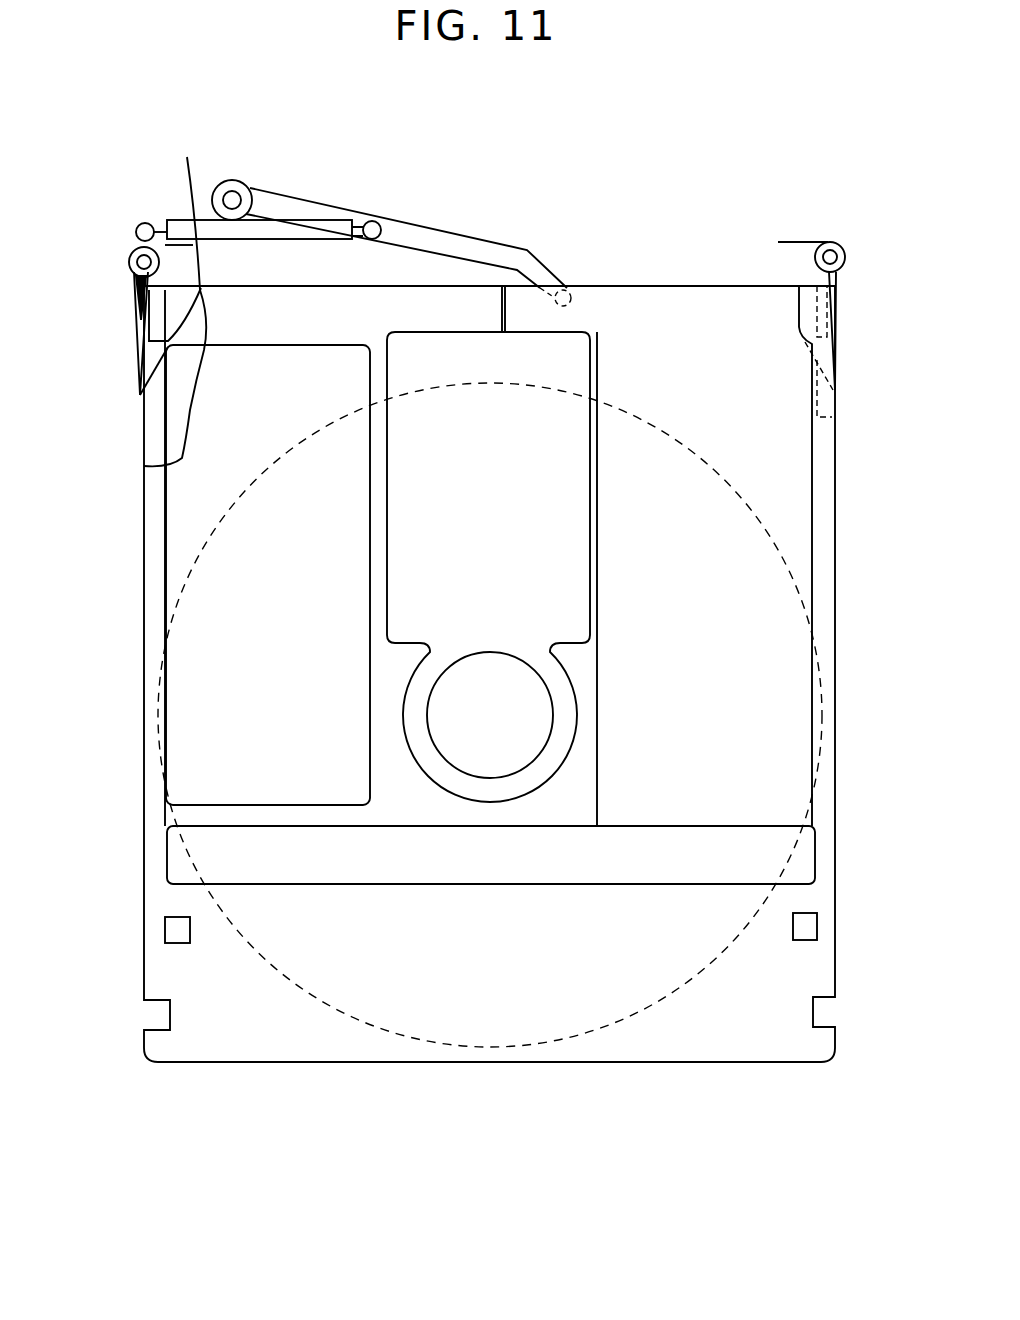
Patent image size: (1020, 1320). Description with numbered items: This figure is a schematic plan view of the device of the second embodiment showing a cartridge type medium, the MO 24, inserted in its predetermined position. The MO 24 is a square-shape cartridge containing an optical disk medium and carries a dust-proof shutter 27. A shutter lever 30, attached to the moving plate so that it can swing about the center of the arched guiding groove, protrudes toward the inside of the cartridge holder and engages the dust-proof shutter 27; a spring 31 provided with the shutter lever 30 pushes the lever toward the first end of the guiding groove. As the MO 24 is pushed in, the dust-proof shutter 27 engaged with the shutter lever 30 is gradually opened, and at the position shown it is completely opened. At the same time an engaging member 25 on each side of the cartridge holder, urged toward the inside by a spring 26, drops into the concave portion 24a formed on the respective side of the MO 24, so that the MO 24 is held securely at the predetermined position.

The MO 24 is at (144, 531).
The concave portion 24a is at (175, 299).
The engaging member 25 is at (143, 347).
The spring 26 is at (168, 230).
The dust-proof shutter 27 is at (727, 588).
The shutter lever 30 is at (237, 180).
The spring 31 is at (278, 217).